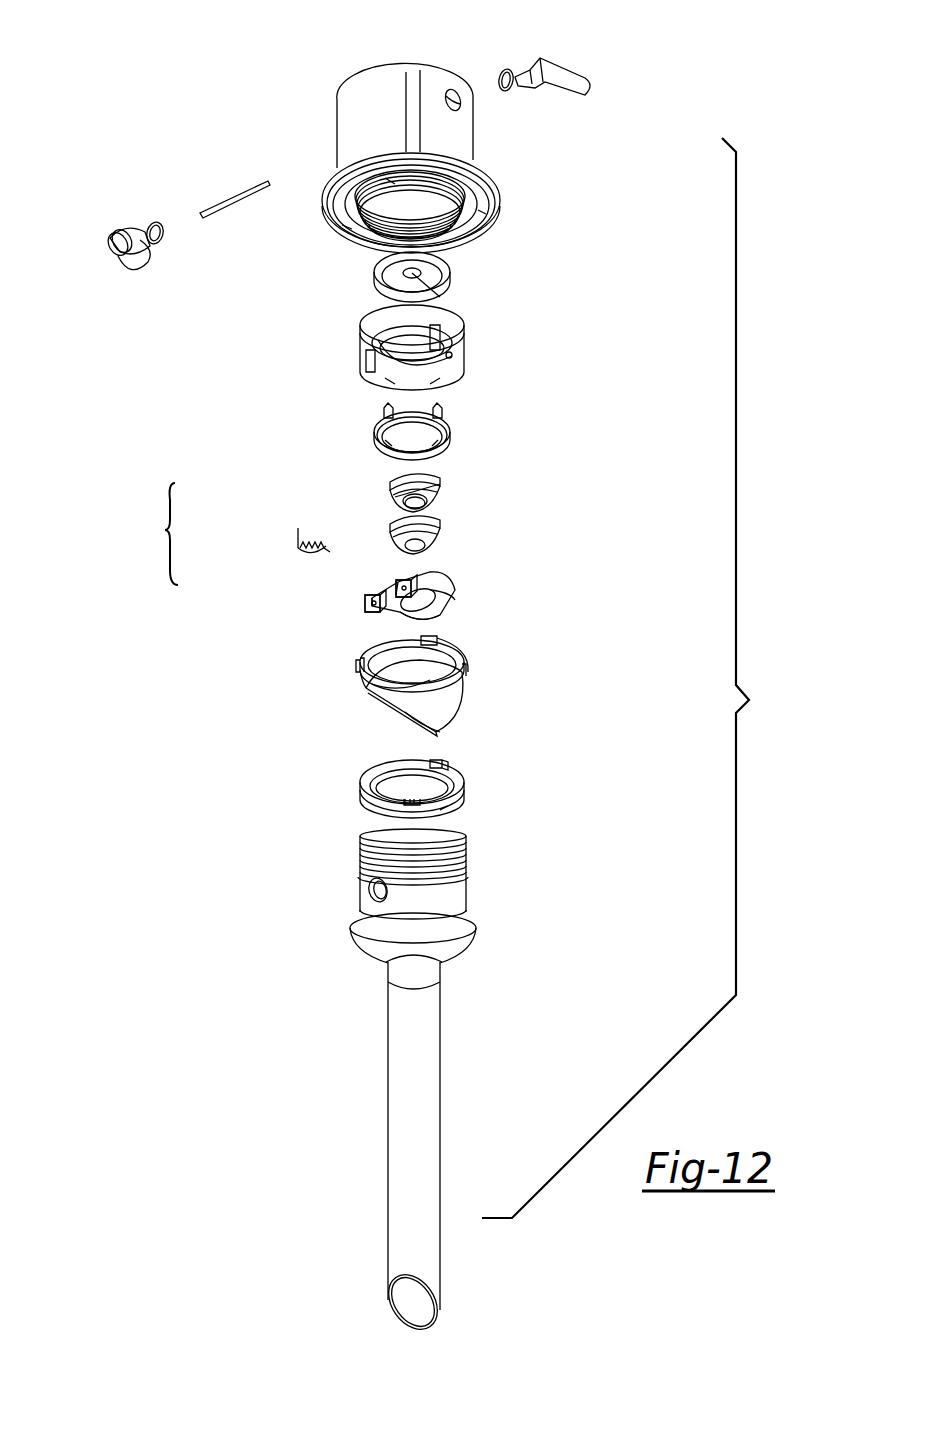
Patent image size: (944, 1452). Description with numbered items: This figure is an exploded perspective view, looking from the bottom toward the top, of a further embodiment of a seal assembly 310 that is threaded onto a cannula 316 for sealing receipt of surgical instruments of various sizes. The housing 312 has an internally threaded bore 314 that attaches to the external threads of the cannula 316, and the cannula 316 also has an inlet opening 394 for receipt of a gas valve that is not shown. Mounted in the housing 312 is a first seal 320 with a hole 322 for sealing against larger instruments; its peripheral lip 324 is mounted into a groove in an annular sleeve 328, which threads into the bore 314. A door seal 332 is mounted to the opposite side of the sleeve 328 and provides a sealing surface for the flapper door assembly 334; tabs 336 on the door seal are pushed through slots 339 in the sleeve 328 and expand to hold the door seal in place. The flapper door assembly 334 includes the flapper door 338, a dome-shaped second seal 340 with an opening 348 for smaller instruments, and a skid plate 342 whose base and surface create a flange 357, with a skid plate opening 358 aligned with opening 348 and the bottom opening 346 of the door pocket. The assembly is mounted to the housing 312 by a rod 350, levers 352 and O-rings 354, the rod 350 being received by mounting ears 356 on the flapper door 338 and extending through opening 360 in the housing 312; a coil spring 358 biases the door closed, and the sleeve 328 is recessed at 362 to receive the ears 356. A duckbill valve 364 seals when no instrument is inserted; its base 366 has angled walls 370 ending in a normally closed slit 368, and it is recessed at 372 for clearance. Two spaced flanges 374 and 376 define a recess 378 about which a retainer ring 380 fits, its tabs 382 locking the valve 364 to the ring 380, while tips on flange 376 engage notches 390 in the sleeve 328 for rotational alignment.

The seal assembly 310 is at (172, 425).
The housing 312 is at (300, 127).
The internally threaded bore 314 is at (470, 212).
The cannula 316 is at (375, 1065).
The first seal 320 is at (372, 282).
The hole 322 is at (435, 278).
The peripheral lip 324 is at (440, 262).
The annular sleeve 328 is at (485, 335).
The door seal 332 is at (460, 465).
The flapper door assembly 334 is at (502, 636).
The tabs 336 is at (445, 408).
The flapper door 338 is at (480, 600).
The slots 339 is at (452, 357).
The second seal 340 is at (455, 540).
The skid plate 342 is at (368, 455).
The opening at bottom of pocket 346 is at (408, 603).
The opening 348 is at (405, 562).
The rod 350 is at (240, 196).
The levers 352 is at (115, 238).
The O-rings 354 is at (156, 222).
The mounting ears 356 is at (372, 600).
The flange 357 is at (395, 490).
The coil spring 358 is at (300, 545).
The opening 360 is at (460, 92).
The recess 362 is at (370, 360).
The duckbill valve 364 is at (330, 675).
The base 366 is at (380, 690).
The slit 368 is at (395, 792).
The angled walls 370 is at (430, 710).
The recess 372 is at (385, 640).
The flange 374 is at (462, 705).
The flange 376 is at (440, 642).
The recess 378 is at (468, 658).
The retainer ring 380 is at (335, 790).
The tabs 382 is at (452, 768).
The notches 390 is at (440, 337).
The inlet opening 394 is at (375, 888).